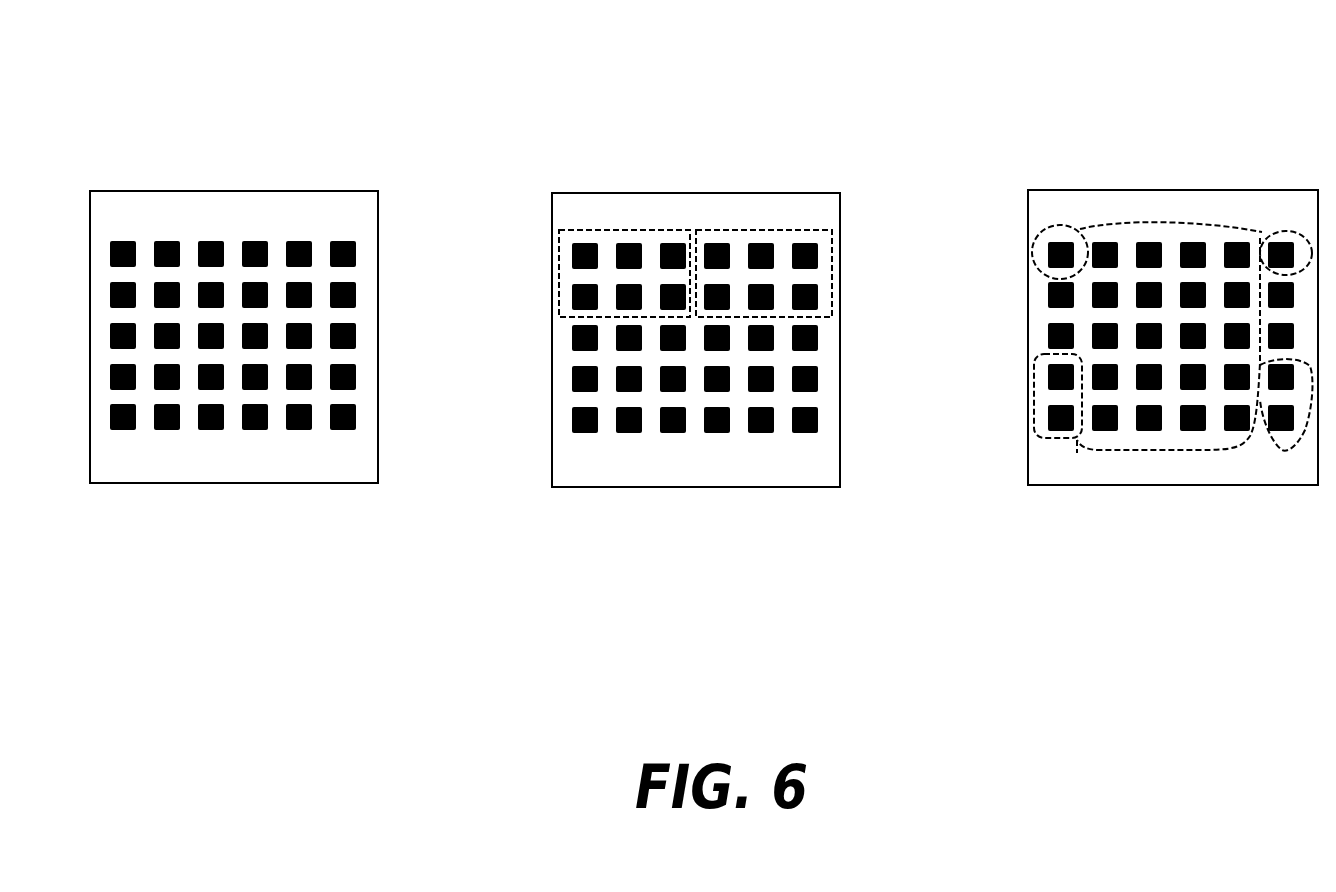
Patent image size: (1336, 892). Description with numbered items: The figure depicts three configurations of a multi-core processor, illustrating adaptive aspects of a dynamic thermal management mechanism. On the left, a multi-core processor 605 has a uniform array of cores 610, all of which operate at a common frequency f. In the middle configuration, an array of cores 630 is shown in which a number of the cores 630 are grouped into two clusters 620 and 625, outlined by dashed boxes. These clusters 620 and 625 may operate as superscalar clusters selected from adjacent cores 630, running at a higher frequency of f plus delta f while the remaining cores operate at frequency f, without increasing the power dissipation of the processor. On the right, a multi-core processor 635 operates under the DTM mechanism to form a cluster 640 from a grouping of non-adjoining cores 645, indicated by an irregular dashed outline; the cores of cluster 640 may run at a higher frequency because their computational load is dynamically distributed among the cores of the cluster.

The multi-core processor 605 is at (234, 296).
The uniform array of cores 610 is at (167, 443).
The cluster 620 is at (615, 219).
The cluster 625 is at (690, 314).
The cores 630 is at (583, 462).
The multi-core processor 635 is at (1131, 271).
The cluster 640 is at (1088, 223).
The non-adjoining cores 645 is at (1043, 332).